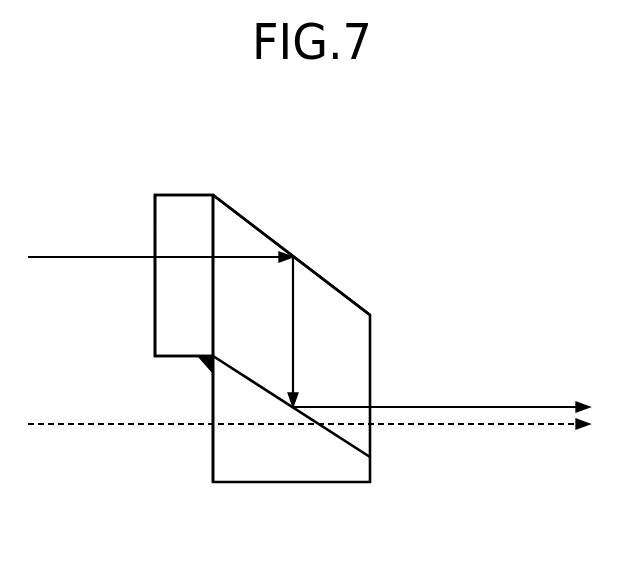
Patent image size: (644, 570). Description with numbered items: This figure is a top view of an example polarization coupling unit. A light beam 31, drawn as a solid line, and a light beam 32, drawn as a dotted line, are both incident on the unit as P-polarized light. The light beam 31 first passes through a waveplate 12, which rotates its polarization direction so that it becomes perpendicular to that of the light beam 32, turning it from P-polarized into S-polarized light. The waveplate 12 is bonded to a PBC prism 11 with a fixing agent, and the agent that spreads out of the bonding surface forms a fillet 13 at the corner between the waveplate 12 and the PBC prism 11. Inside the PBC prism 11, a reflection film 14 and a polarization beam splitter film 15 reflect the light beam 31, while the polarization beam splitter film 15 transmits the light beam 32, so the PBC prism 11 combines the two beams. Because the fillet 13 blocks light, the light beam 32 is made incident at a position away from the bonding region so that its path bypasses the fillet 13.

The PBC prism 11 is at (334, 254).
The waveplate 12 is at (182, 194).
The fillet 13 is at (200, 366).
The reflection film 14 is at (256, 226).
The polarization beam splitter film 15 is at (340, 440).
The light beam 31 is at (62, 255).
The light beam 32 is at (62, 423).